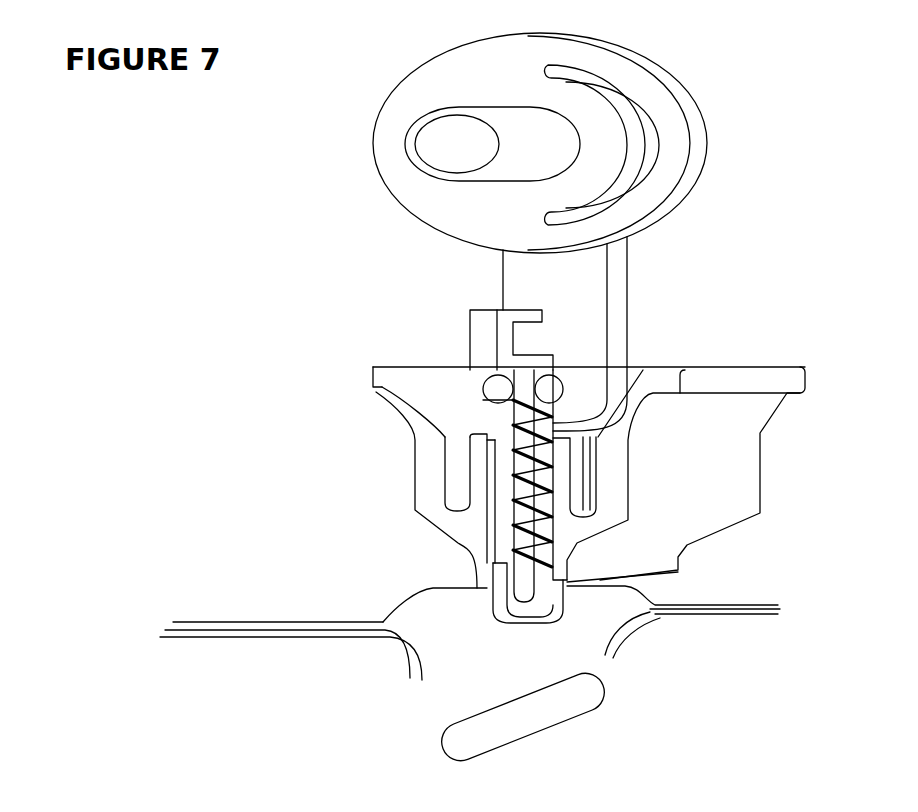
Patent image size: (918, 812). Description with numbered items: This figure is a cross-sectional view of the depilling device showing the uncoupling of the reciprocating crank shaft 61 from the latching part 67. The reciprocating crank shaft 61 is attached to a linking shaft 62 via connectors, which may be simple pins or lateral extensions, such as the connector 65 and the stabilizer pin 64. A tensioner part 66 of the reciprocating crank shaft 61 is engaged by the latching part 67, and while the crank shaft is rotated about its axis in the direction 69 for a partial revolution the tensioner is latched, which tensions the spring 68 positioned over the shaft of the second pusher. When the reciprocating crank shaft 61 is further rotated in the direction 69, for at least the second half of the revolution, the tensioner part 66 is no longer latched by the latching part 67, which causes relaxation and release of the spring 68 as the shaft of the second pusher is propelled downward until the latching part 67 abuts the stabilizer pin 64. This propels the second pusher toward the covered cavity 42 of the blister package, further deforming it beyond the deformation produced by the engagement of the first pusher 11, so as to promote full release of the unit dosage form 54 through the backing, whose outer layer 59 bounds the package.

The first pusher 11 is at (700, 486).
The covered cavity 42 is at (495, 600).
The dosage form 54 is at (523, 717).
The outer layer 59 is at (470, 633).
The reciprocating crank shaft 61 is at (540, 143).
The linking shaft 62 is at (589, 429).
The stabilizer pin 64 is at (578, 402).
The connector 65 is at (507, 603).
The tensioner part 66 is at (627, 103).
The latching part 67 is at (485, 325).
The spring 68 is at (495, 423).
The direction of rotation 69 is at (733, 130).